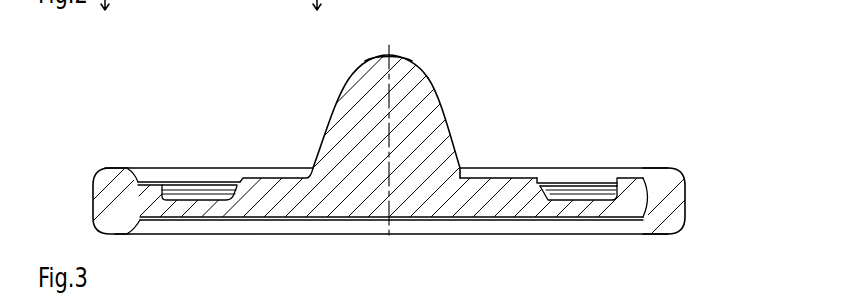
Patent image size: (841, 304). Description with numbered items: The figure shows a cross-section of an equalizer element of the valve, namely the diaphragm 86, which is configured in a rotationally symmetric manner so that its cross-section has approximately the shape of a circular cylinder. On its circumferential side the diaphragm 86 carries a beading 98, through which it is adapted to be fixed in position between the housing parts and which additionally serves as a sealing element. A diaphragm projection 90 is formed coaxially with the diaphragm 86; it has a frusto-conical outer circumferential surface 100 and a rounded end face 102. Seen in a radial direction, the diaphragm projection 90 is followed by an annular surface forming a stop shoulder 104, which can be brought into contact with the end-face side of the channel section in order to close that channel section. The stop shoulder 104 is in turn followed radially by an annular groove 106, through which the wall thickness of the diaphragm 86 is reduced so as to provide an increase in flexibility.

The diaphragm 86 is at (377, 210).
The diaphragm projection 90 is at (433, 119).
The beading 98 is at (672, 186).
The frusto-conical outer circumferential surface 100 is at (462, 139).
The rounded end face 102 is at (410, 60).
The stop shoulder 104 is at (277, 178).
The annular groove 106 is at (177, 181).